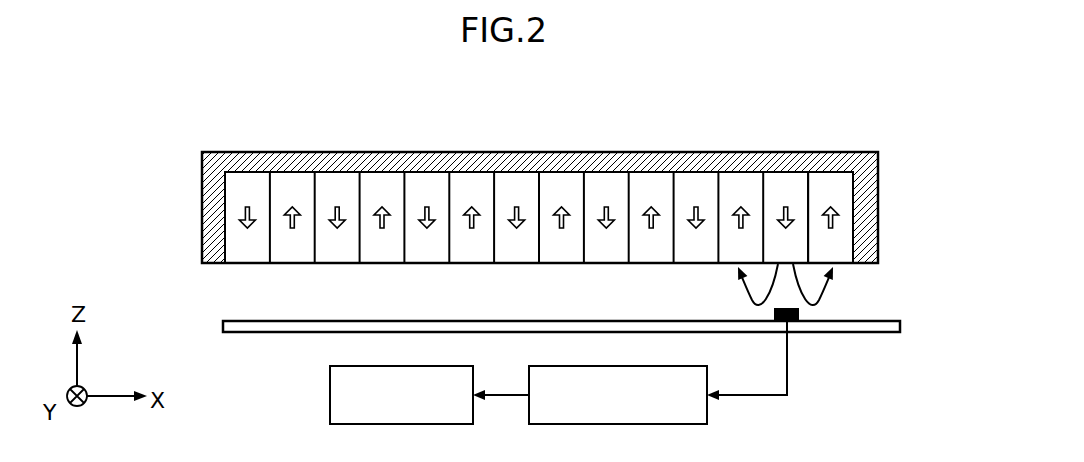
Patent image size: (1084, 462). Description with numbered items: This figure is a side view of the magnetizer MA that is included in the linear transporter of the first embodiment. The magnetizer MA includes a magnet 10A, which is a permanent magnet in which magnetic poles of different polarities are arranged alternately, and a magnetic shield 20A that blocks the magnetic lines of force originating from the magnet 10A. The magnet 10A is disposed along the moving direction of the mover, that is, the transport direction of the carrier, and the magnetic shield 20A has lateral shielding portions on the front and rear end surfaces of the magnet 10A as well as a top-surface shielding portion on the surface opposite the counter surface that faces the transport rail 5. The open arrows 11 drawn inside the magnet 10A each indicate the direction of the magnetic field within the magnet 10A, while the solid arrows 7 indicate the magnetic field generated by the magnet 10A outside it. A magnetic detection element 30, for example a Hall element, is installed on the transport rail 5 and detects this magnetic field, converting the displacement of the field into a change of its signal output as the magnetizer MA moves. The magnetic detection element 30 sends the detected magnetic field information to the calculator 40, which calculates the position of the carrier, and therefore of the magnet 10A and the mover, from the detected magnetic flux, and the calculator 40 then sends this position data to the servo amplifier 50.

The magnet 10A is at (382, 182).
The magnetic shield 20A is at (656, 152).
The open arrows 11 is at (785, 203).
The magnetizer MA is at (580, 171).
The solid arrows 7 is at (833, 289).
The transport rail 5 is at (912, 312).
The magnetic detection element 30 is at (799, 312).
The calculator 40 is at (689, 345).
The servo amplifier 50 is at (420, 345).